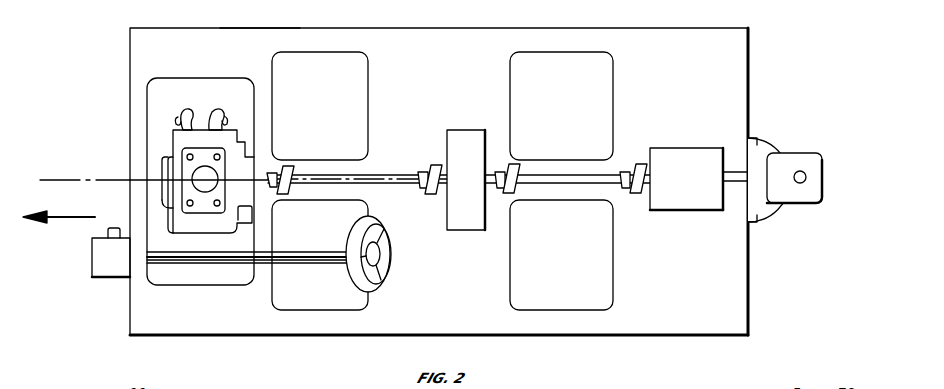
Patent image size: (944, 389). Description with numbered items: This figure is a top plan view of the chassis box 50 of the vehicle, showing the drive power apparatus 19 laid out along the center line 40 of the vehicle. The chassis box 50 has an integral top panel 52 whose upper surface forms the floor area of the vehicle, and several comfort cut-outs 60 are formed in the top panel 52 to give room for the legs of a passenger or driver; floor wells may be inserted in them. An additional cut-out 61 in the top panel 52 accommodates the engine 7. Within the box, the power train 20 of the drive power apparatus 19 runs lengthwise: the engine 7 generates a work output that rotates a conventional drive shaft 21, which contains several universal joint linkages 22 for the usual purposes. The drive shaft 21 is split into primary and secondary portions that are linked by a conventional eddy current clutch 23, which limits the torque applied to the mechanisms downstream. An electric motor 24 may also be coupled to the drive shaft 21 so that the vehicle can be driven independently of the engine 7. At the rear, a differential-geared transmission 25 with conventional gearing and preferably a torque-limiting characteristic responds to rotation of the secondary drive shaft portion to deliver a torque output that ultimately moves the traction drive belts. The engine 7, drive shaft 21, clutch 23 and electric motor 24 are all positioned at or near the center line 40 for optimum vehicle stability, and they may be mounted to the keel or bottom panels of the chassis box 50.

The engine 7 is at (205, 125).
The drive power apparatus 19 is at (165, 124).
The power train 20 is at (126, 160).
The drive shaft 21 is at (392, 175).
The universal joint linkages 22 is at (520, 170).
The eddy current clutch 23 is at (468, 130).
The electric motor 24 is at (682, 155).
The differential-geared transmission 25 is at (800, 163).
The center line 40 is at (105, 176).
The chassis box 50 is at (228, 28).
The top panel 52 is at (252, 42).
The comfort cut-outs 60 is at (334, 63).
The cut-out 61 is at (172, 92).